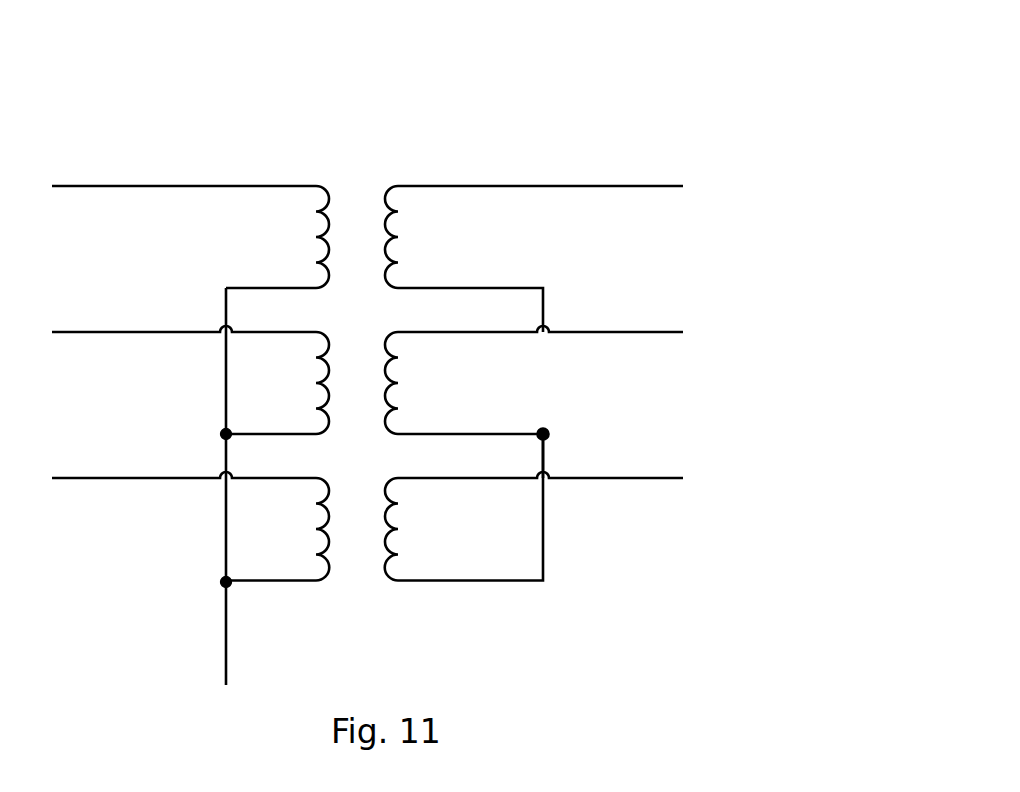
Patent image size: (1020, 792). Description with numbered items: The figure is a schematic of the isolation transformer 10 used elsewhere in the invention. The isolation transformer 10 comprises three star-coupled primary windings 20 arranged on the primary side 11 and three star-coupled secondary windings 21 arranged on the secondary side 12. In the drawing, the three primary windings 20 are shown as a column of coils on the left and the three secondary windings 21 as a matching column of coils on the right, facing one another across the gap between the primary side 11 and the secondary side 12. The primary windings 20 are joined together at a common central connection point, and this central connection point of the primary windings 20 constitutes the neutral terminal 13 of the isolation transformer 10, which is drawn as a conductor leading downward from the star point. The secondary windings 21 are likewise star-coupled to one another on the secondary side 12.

The isolation transformer 10 is at (728, 72).
The primary side 11 is at (316, 140).
The secondary side 12 is at (392, 140).
The neutral terminal 13 is at (228, 643).
The primary windings 20 is at (316, 238).
The secondary windings 21 is at (398, 237).